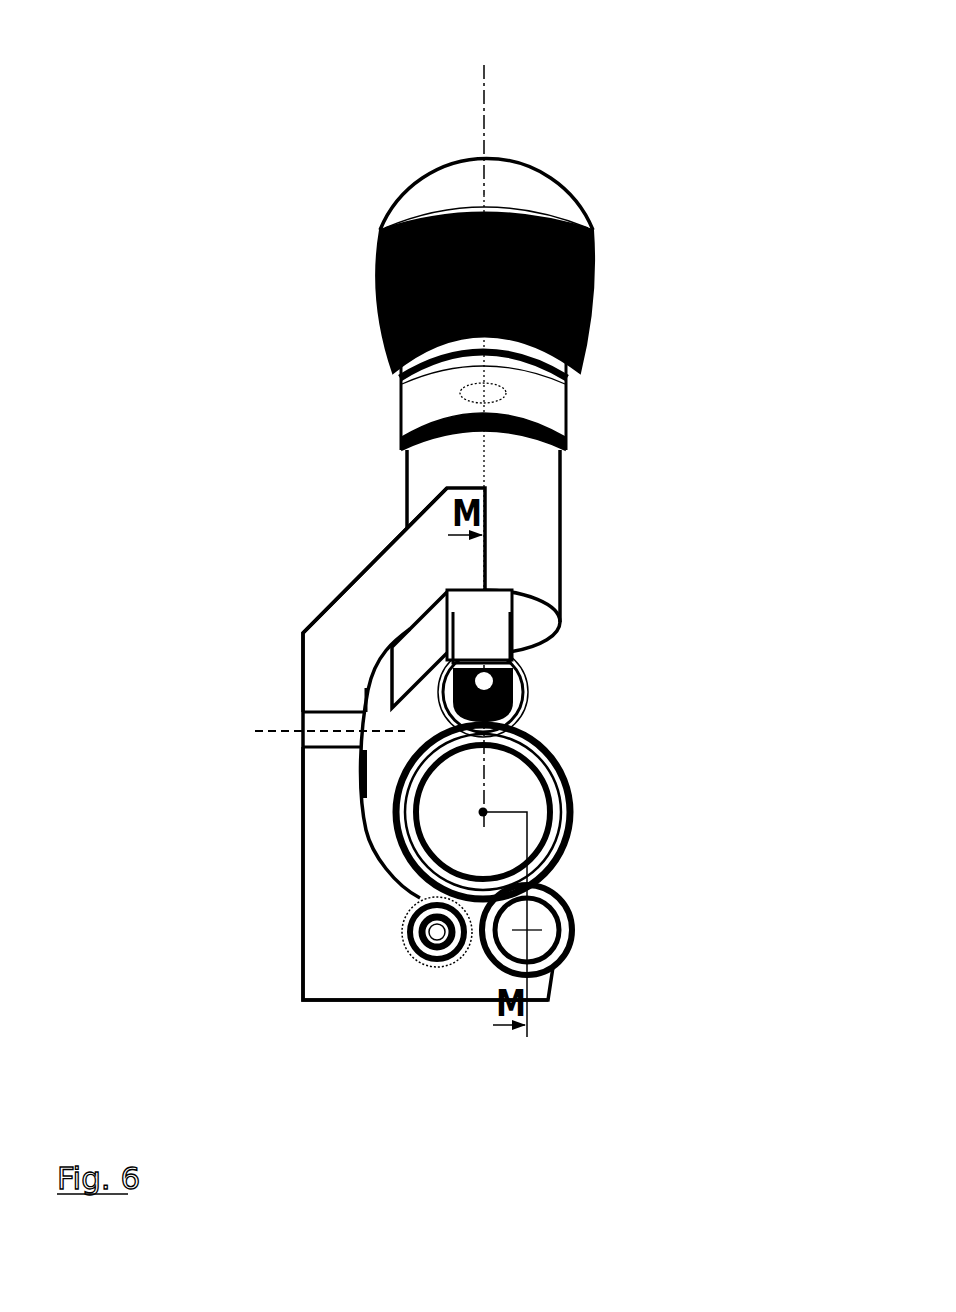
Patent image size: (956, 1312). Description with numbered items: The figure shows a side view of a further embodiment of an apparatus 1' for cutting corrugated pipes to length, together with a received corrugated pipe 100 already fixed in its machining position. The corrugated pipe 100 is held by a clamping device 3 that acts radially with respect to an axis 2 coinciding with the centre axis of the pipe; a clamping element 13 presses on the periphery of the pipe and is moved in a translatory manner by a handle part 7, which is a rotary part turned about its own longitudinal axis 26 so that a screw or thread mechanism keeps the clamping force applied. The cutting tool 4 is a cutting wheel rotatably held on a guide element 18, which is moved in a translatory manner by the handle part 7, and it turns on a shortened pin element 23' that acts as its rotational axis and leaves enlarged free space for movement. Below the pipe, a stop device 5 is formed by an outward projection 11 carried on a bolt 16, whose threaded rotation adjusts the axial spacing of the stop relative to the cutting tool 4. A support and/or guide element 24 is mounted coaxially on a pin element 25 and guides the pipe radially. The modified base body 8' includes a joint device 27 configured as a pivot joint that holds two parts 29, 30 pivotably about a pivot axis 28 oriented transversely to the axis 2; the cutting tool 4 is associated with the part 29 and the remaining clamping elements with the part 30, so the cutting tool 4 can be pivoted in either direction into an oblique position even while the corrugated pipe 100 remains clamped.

The apparatus 1' is at (461, 548).
The axis 2 is at (486, 810).
The clamping device 3 is at (440, 727).
The cutting tool 4 is at (573, 688).
The stop device 5 is at (567, 893).
The handle part 7 is at (593, 278).
The base body 8' is at (328, 725).
The projection 11 is at (616, 963).
The clamping element 13 is at (522, 693).
The bolt 16 is at (542, 948).
The guide element 18 is at (593, 563).
The pin element 23' is at (580, 616).
The support and/or guide element 24 is at (428, 960).
The pin element 25 is at (317, 984).
The longitudinal axis 26 is at (488, 105).
The joint device 27 is at (333, 722).
The pivot axis 28 is at (350, 733).
The part 29 is at (327, 673).
The part 30 is at (333, 913).
The corrugated pipe 100 is at (567, 780).